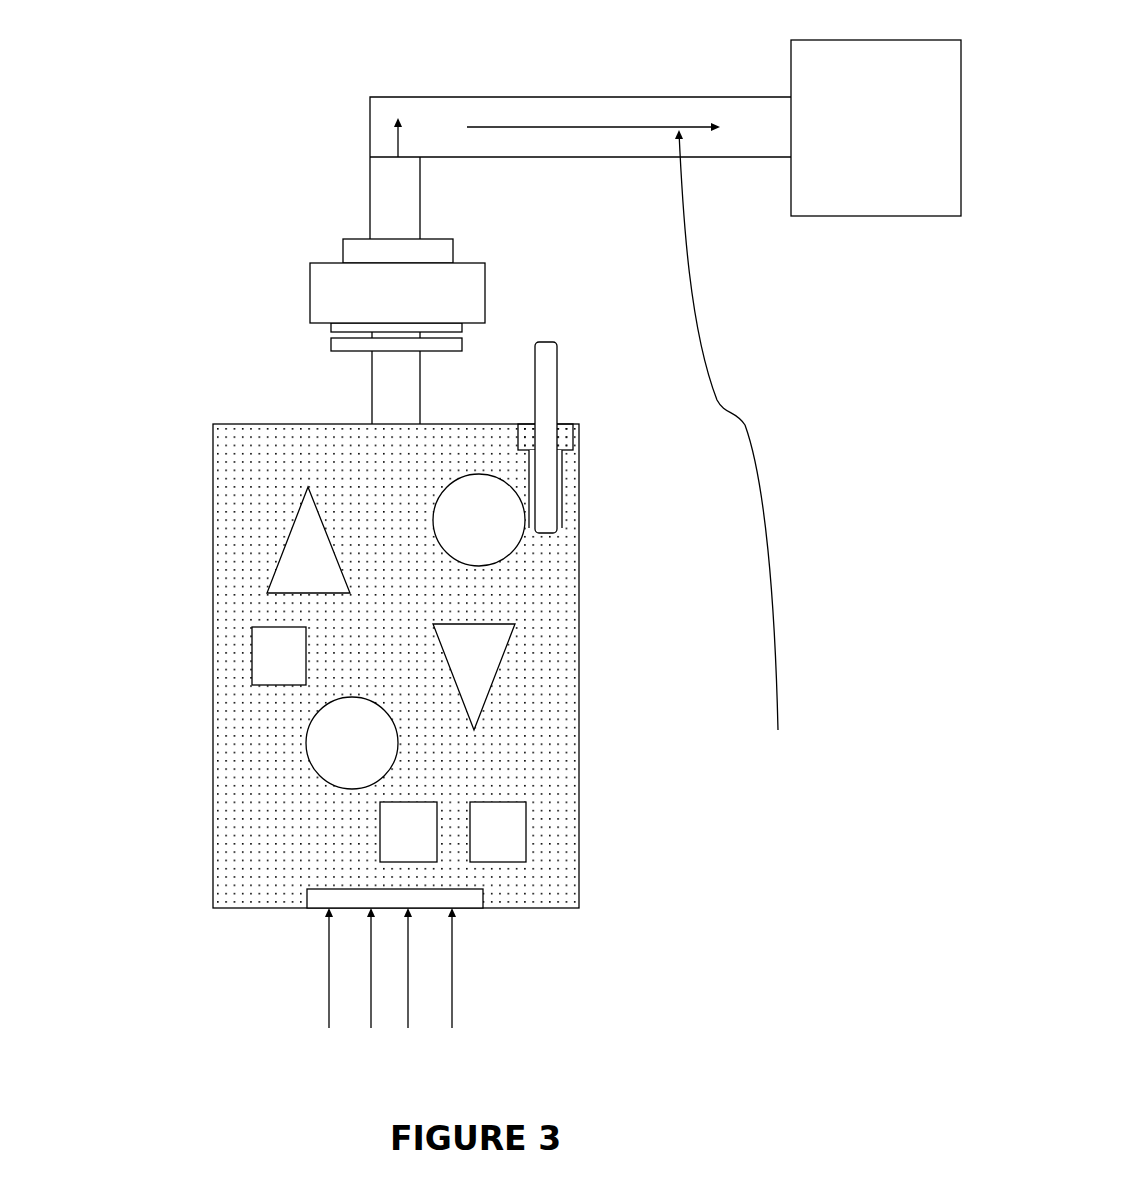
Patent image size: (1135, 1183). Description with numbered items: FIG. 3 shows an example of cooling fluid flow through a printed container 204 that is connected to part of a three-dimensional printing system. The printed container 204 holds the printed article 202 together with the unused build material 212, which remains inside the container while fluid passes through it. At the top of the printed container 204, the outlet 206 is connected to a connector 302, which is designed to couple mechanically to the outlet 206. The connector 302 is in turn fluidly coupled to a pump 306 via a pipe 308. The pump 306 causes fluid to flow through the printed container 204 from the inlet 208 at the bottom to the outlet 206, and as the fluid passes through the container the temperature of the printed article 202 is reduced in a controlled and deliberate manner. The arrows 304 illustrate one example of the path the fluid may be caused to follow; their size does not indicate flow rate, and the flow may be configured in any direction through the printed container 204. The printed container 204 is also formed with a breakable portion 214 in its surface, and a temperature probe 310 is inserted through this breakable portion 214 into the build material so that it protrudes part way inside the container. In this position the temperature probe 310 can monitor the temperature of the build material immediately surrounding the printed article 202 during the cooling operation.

The printed article 202 is at (250, 655).
The printed container 204 is at (213, 495).
The outlet 206 is at (393, 352).
The inlet 208 is at (395, 887).
The unused build material 212 is at (248, 765).
The breakable portion 214 is at (575, 437).
The connector 302 is at (310, 293).
The arrows 304 is at (454, 973).
The pump 306 is at (791, 55).
The pipe 308 is at (370, 110).
The temperature probe 310 is at (545, 338).